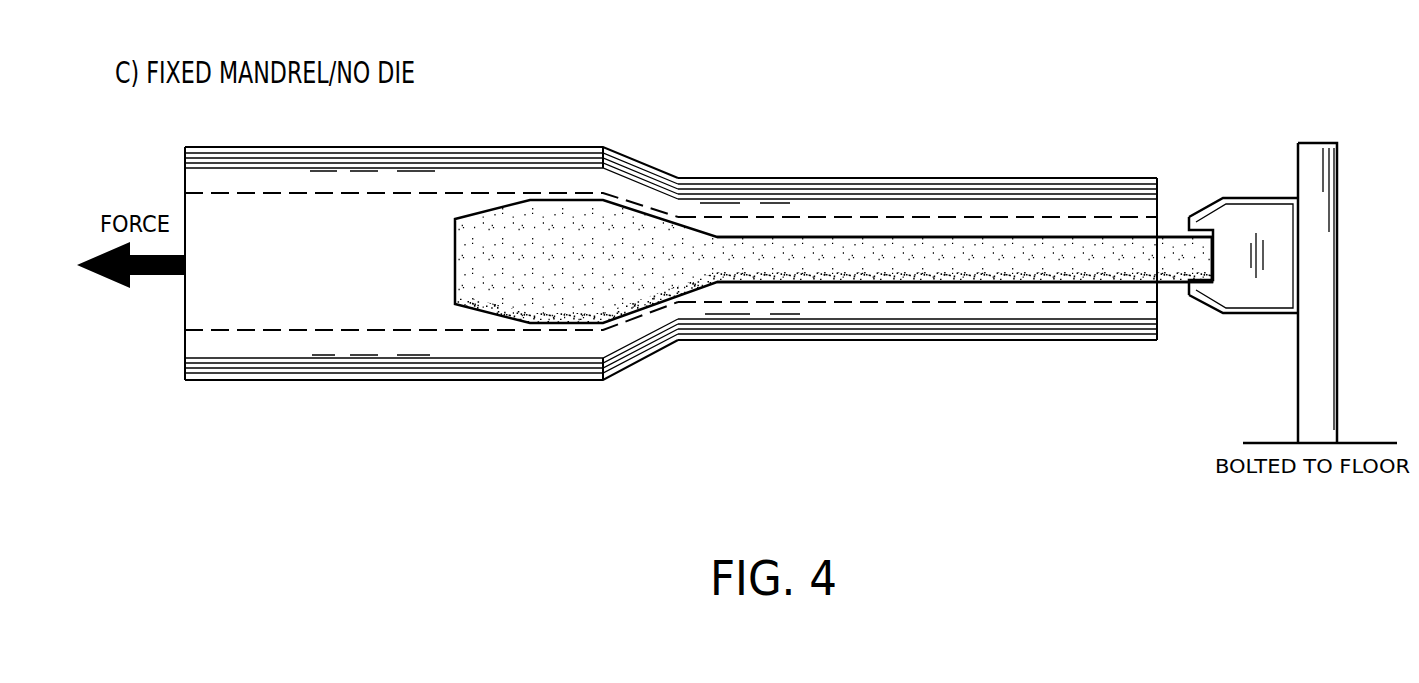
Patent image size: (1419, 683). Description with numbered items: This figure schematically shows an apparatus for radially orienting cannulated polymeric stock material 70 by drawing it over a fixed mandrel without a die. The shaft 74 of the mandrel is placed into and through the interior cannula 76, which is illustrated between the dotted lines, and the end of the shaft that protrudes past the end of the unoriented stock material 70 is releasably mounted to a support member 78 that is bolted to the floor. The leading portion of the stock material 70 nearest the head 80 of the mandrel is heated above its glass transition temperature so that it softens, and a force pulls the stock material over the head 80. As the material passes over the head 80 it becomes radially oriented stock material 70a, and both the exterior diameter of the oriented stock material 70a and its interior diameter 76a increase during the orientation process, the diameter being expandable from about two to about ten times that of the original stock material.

The radially oriented stock material 70a is at (452, 145).
The cannulated stock material 70 is at (868, 175).
The head of the mandrel 80 is at (637, 247).
The support member 78 is at (1265, 218).
The shaft of the mandrel 74 is at (1020, 270).
The interior cannula 76 is at (817, 298).
The interior diameter of oriented stock material 76a is at (360, 325).